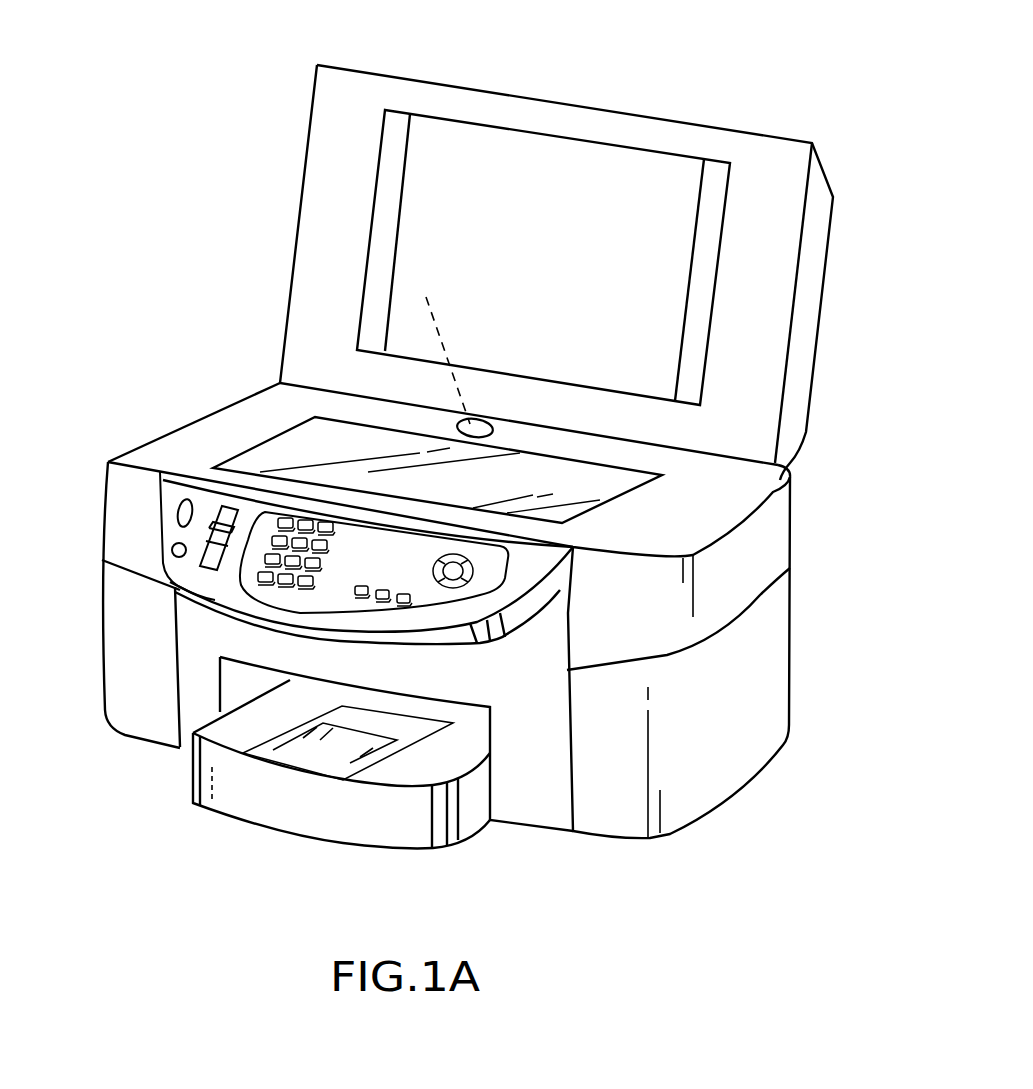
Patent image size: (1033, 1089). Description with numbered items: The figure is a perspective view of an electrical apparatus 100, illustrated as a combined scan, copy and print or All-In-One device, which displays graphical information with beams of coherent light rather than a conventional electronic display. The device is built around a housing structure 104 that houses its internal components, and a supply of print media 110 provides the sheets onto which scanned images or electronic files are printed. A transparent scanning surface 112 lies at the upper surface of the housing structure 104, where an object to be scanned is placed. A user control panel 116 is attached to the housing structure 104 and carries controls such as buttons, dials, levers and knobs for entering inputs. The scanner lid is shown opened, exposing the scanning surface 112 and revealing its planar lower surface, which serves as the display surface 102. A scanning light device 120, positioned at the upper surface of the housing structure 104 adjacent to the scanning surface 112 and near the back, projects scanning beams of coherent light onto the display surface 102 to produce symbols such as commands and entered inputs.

The electrical apparatus 100 is at (762, 58).
The display surface 102 is at (454, 150).
The housing structure 104 is at (789, 655).
The supply of print media 110 is at (260, 810).
The scanning surface 112 is at (287, 460).
The user control panel 116 is at (170, 530).
The scanning light device 120 is at (462, 422).